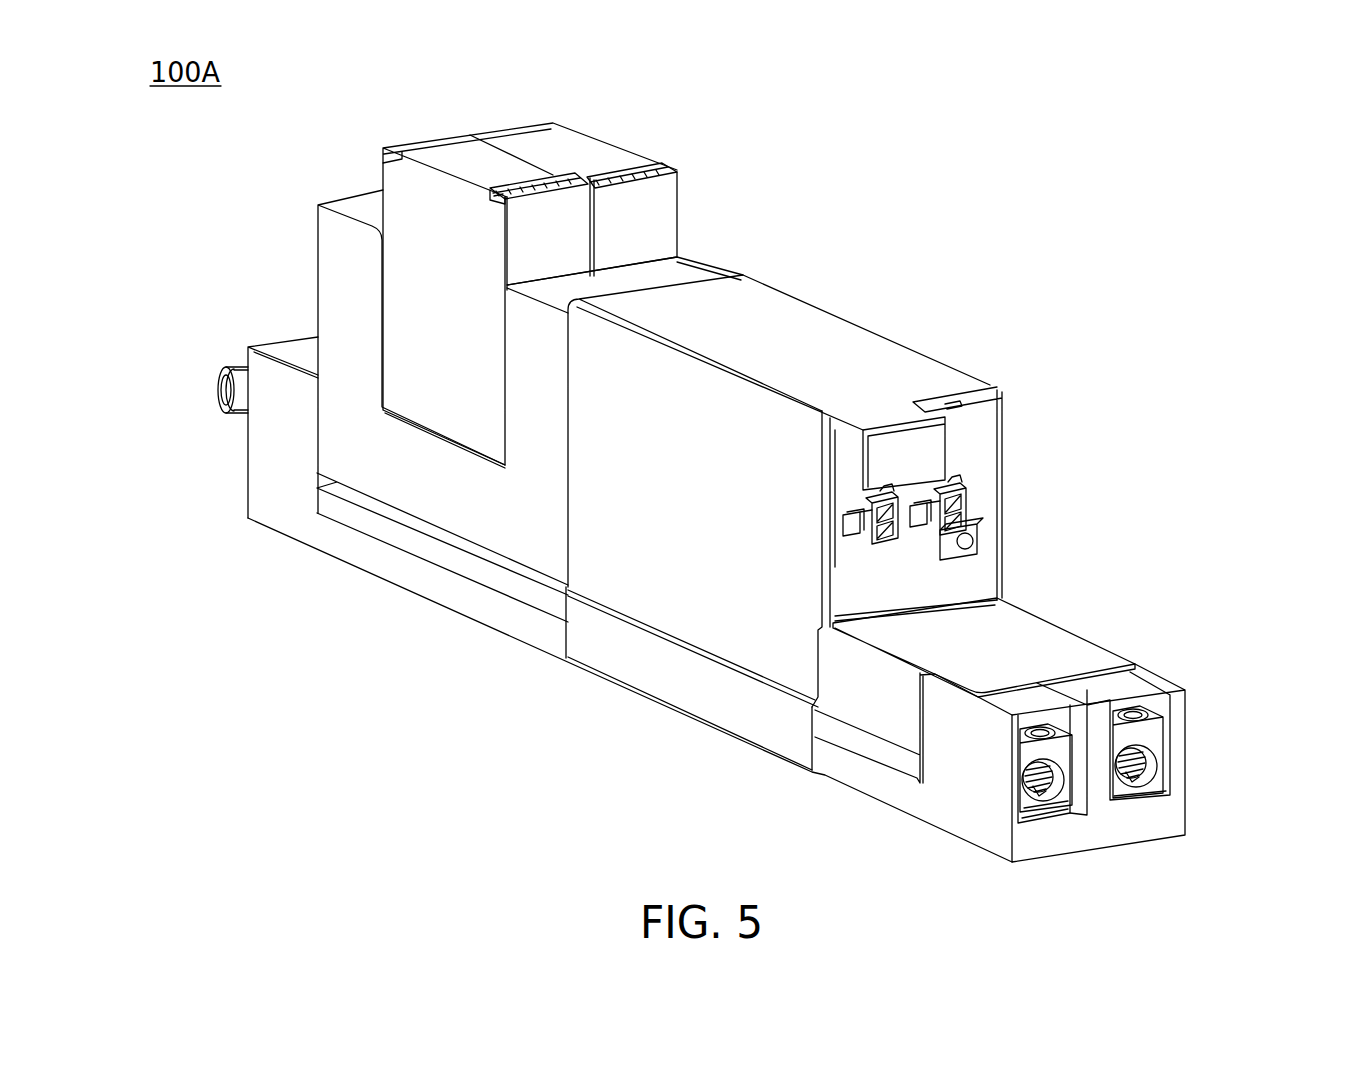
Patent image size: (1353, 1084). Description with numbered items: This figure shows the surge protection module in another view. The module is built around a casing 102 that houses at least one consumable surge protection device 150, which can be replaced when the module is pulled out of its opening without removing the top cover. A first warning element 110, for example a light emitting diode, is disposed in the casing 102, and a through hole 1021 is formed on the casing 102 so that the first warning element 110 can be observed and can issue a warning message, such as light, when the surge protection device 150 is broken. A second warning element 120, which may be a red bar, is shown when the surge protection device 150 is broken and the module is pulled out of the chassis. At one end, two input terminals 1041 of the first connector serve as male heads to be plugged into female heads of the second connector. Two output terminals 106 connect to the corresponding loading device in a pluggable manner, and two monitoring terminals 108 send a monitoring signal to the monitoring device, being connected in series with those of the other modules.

The casing 102 is at (846, 334).
The output terminals 106 is at (1143, 770).
The monitoring terminals 108 is at (948, 495).
The first warning element 110 is at (985, 546).
The second warning element 120 is at (627, 172).
The surge protection device 150 is at (587, 137).
The through hole 1021 is at (975, 528).
The input terminals 1041 is at (228, 383).